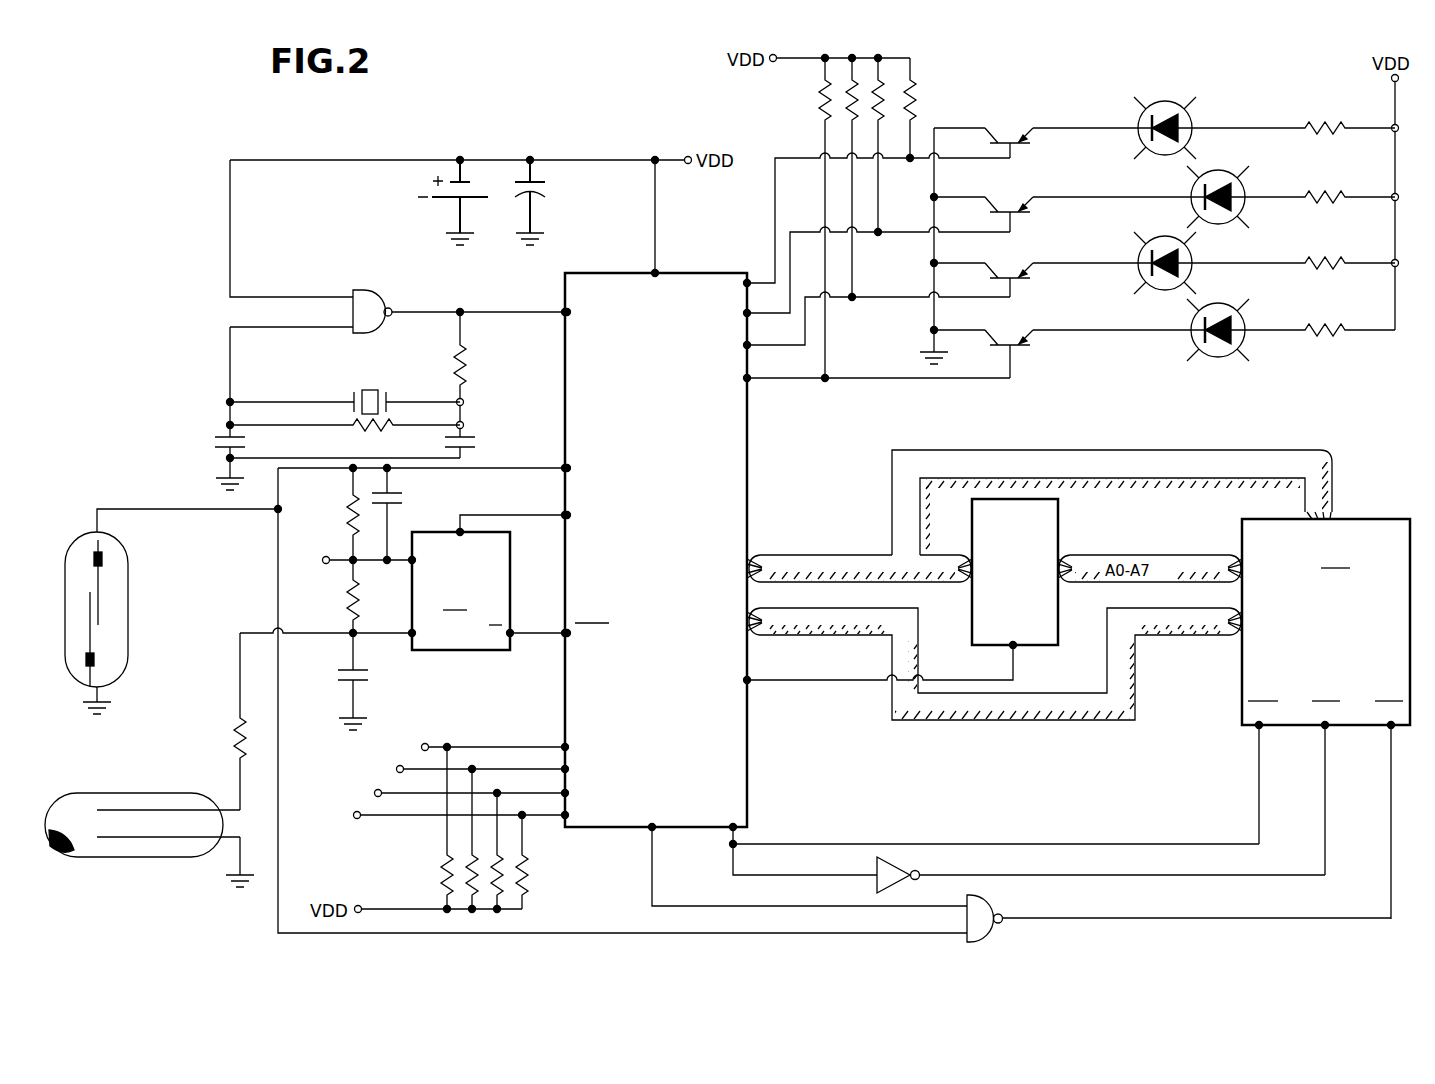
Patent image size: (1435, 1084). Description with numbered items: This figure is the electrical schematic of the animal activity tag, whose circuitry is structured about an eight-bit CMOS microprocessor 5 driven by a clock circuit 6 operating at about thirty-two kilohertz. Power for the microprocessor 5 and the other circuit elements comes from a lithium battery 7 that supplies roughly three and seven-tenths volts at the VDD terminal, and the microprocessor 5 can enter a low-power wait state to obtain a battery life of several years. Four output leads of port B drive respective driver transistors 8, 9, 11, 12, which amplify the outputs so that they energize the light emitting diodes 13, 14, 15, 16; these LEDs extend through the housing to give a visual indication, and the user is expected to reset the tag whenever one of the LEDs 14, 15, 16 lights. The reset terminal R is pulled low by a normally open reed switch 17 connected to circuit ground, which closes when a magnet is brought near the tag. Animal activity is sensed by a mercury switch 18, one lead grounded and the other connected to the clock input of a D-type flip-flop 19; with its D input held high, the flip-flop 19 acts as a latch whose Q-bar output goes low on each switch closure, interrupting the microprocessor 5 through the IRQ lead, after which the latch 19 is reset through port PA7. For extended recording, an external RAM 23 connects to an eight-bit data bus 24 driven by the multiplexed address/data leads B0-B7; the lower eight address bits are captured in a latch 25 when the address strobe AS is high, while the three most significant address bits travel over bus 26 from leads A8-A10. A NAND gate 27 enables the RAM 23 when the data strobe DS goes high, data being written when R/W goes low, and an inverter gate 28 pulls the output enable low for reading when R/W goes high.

The microprocessor 5 is at (603, 836).
The clock circuit 6 is at (480, 404).
The lithium battery 7 is at (418, 175).
The driver transistor 8 is at (1003, 137).
The driver transistor 9 is at (1012, 207).
The driver transistor 11 is at (1012, 273).
The driver transistor 12 is at (1012, 340).
The light emitting diode 13 is at (1190, 111).
The light emitting diode 14 is at (1243, 182).
The light emitting diode 15 is at (1188, 252).
The light emitting diode 16 is at (1243, 318).
The reed switch 17 is at (130, 598).
The mercury switch 18 is at (178, 793).
The D-type flip-flop 19 is at (405, 599).
The random access memory 23 is at (1326, 622).
The data bus 24 is at (1160, 480).
The latch 25 is at (1060, 527).
The bus 26 is at (1073, 722).
The NAND gate 27 is at (1002, 910).
The inverter gate 28 is at (903, 860).